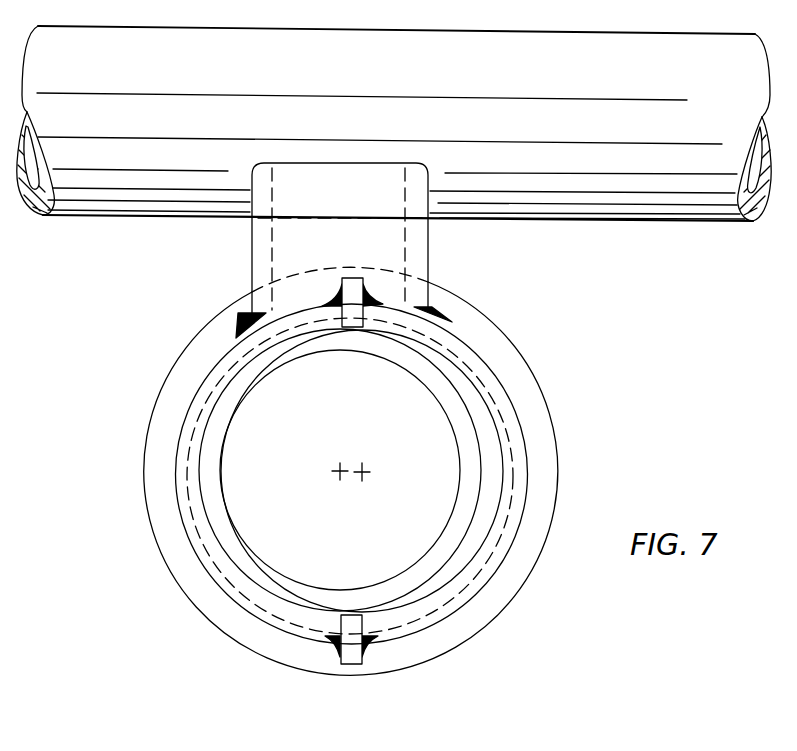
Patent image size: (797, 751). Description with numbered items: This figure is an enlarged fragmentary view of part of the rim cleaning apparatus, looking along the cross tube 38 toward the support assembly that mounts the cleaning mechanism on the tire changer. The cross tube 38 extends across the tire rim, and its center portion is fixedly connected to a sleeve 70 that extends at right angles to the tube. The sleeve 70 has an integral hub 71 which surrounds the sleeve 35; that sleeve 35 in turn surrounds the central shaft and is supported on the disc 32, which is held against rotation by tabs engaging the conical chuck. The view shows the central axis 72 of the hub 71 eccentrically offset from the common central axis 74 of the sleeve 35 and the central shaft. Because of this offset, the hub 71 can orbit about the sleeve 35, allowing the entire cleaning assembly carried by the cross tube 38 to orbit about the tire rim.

The cross tube 38 is at (594, 128).
The sleeve 70 is at (395, 237).
The hub 71 is at (505, 392).
The disc 32 is at (527, 567).
The sleeve 35 is at (232, 540).
The central axis of the hub 72 is at (363, 470).
The common central axis 74 is at (340, 469).